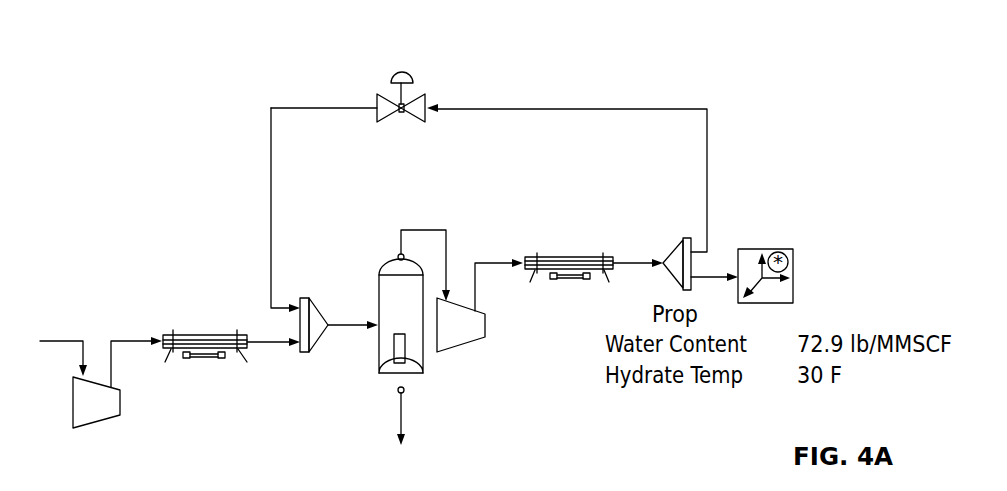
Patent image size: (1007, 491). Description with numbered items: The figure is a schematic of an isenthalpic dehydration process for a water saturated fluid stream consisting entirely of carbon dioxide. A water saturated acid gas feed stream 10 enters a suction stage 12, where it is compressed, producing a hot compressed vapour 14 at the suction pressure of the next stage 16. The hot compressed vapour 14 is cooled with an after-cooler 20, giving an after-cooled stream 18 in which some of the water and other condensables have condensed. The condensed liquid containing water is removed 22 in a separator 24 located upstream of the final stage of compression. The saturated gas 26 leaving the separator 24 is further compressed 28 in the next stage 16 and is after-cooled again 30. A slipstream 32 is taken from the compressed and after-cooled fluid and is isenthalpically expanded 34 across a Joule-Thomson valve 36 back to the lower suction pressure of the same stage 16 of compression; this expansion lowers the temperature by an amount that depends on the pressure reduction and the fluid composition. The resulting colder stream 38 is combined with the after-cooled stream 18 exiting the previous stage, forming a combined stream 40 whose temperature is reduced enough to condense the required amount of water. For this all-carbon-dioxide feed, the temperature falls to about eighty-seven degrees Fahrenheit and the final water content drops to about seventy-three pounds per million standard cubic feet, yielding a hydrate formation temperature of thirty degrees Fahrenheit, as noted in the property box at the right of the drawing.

The water saturated acid gas feed stream 10 is at (62, 340).
The suction stage 12 is at (97, 425).
The hot compressed vapour 14 is at (130, 340).
The next stage 16 is at (460, 347).
The after-cooled stream 18 is at (263, 343).
The after-cooler 20 is at (206, 334).
The condensed liquid removal 22 is at (402, 417).
The separator 24 is at (386, 262).
The saturated gas 26 is at (425, 229).
The further compression 28 is at (492, 261).
The after-cooling 30 is at (628, 261).
The slipstream 32 is at (633, 108).
The isenthalpic expansion 34 is at (270, 116).
The Joule-Thomson valve 36 is at (428, 100).
The colder stream 38 is at (270, 206).
The combined stream 40 is at (347, 329).